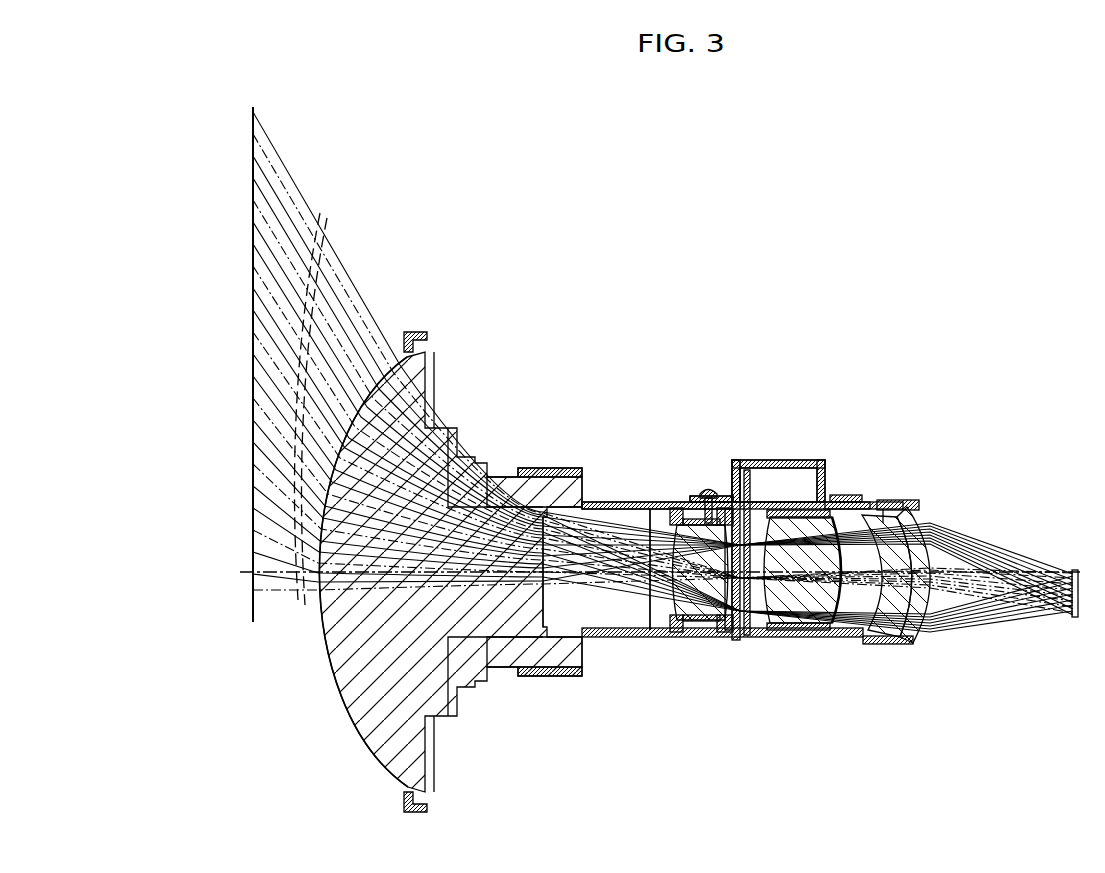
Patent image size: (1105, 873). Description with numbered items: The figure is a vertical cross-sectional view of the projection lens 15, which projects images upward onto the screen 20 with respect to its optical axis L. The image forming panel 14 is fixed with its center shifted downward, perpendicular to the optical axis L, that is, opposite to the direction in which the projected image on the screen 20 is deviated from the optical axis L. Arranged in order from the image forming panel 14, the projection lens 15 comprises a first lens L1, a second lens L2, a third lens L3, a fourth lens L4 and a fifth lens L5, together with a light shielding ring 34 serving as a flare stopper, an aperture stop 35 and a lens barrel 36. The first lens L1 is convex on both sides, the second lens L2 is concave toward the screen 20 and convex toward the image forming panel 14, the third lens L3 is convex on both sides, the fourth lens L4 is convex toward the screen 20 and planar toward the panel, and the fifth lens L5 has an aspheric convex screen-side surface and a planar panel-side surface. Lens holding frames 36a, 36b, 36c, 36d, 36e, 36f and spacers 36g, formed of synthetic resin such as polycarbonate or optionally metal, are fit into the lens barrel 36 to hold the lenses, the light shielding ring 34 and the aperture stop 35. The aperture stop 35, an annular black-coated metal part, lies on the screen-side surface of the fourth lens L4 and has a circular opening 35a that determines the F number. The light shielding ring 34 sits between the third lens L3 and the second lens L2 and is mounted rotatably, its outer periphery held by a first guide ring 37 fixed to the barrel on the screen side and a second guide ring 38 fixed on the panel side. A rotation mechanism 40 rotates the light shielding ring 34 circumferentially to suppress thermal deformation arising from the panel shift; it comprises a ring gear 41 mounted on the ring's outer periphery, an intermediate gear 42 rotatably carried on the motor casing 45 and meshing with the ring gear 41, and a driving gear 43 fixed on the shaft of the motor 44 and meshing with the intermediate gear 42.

The image forming panel 14 is at (1075, 570).
The projection lens 15 is at (781, 362).
The screen 20 is at (253, 132).
The light shielding ring 34 is at (742, 640).
The aperture stop 35 is at (648, 633).
The circular opening 35a is at (668, 614).
The lens barrel 36 is at (608, 497).
The lens holding frame 36a is at (895, 498).
The lens holding frame 36b is at (843, 502).
The lens holding frame 36c is at (682, 509).
The lens holding frame 36d is at (550, 468).
The lens holding frame 36e is at (493, 465).
The lens holding frame 36f is at (405, 332).
The spacer 36g is at (918, 503).
The first guide ring 37 is at (735, 640).
The second guide ring 38 is at (758, 640).
The rotation mechanism 40 is at (735, 486).
The ring gear 41 is at (776, 630).
The intermediate gear 42 is at (727, 498).
The driving gear 43 is at (746, 470).
The motor 44 is at (781, 462).
The motor casing 45 is at (783, 484).
The optical axis L is at (283, 570).
The first lens L1 is at (910, 644).
The second lens L2 is at (870, 640).
The third lens L3 is at (812, 636).
The fourth lens L4 is at (693, 640).
The fifth lens L5 is at (492, 605).